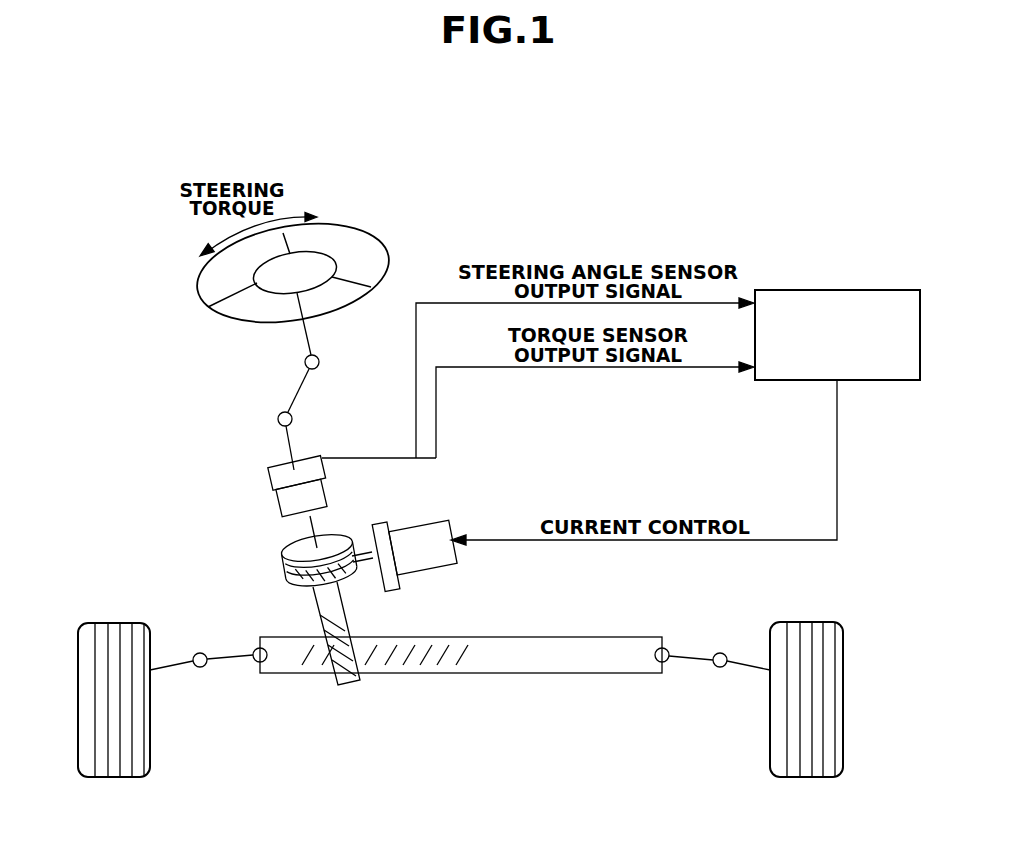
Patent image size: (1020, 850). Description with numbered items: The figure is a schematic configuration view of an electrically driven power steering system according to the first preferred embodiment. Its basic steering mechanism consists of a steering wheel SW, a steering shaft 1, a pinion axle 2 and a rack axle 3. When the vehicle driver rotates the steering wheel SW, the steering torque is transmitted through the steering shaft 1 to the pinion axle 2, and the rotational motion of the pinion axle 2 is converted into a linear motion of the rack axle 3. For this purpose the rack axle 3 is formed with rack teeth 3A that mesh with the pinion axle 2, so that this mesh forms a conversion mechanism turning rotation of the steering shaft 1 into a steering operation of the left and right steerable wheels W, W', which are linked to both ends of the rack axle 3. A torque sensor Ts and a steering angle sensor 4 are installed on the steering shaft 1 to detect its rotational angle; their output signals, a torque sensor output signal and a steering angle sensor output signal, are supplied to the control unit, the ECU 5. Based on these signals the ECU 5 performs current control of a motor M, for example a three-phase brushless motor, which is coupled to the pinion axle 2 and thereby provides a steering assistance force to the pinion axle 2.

The steering shaft 1 is at (288, 440).
The pinion axle 2 is at (326, 605).
The rack axle 3 is at (535, 674).
The rack teeth 3A is at (440, 640).
The steering angle sensor 4 is at (280, 467).
The ECU 5 is at (858, 298).
The steering wheel SW is at (365, 230).
The torque sensor Ts is at (272, 512).
The motor M is at (443, 521).
The steerable wheel W is at (114, 671).
The steerable wheel W' is at (806, 667).